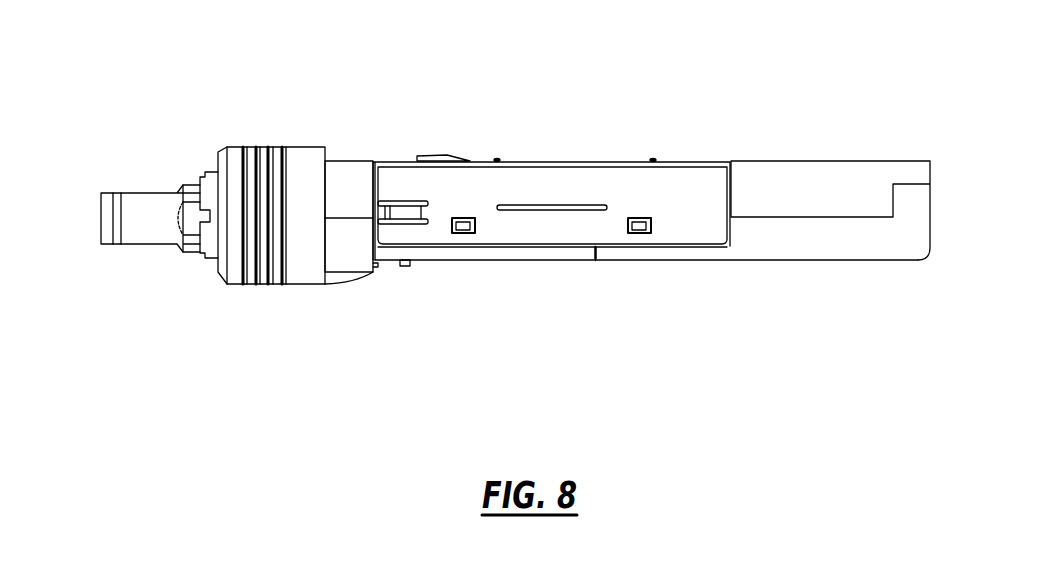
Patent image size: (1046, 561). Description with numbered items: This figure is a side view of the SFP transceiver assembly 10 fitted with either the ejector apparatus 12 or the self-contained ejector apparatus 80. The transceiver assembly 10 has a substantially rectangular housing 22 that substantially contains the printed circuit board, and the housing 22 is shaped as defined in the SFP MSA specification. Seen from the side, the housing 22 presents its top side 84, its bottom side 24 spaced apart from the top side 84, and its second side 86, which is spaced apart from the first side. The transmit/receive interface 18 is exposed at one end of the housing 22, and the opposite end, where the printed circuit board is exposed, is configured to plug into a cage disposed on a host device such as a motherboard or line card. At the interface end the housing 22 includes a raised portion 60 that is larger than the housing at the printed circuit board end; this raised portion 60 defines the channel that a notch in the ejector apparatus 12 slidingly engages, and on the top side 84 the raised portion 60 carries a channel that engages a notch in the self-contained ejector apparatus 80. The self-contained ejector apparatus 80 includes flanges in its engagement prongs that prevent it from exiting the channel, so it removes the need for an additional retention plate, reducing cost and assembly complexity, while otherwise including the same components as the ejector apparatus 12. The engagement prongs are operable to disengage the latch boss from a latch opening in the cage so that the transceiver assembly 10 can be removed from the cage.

The SFP transceiver assembly 10 is at (515, 202).
The ejector apparatus 12 is at (303, 259).
The transmit/receive interface 18 is at (133, 257).
The housing 22 is at (563, 277).
The bottom side 24 is at (637, 262).
The raised portion 60 is at (351, 162).
The self-contained ejector apparatus 80 is at (290, 303).
The top side 84 is at (581, 205).
The second side 86 is at (688, 224).